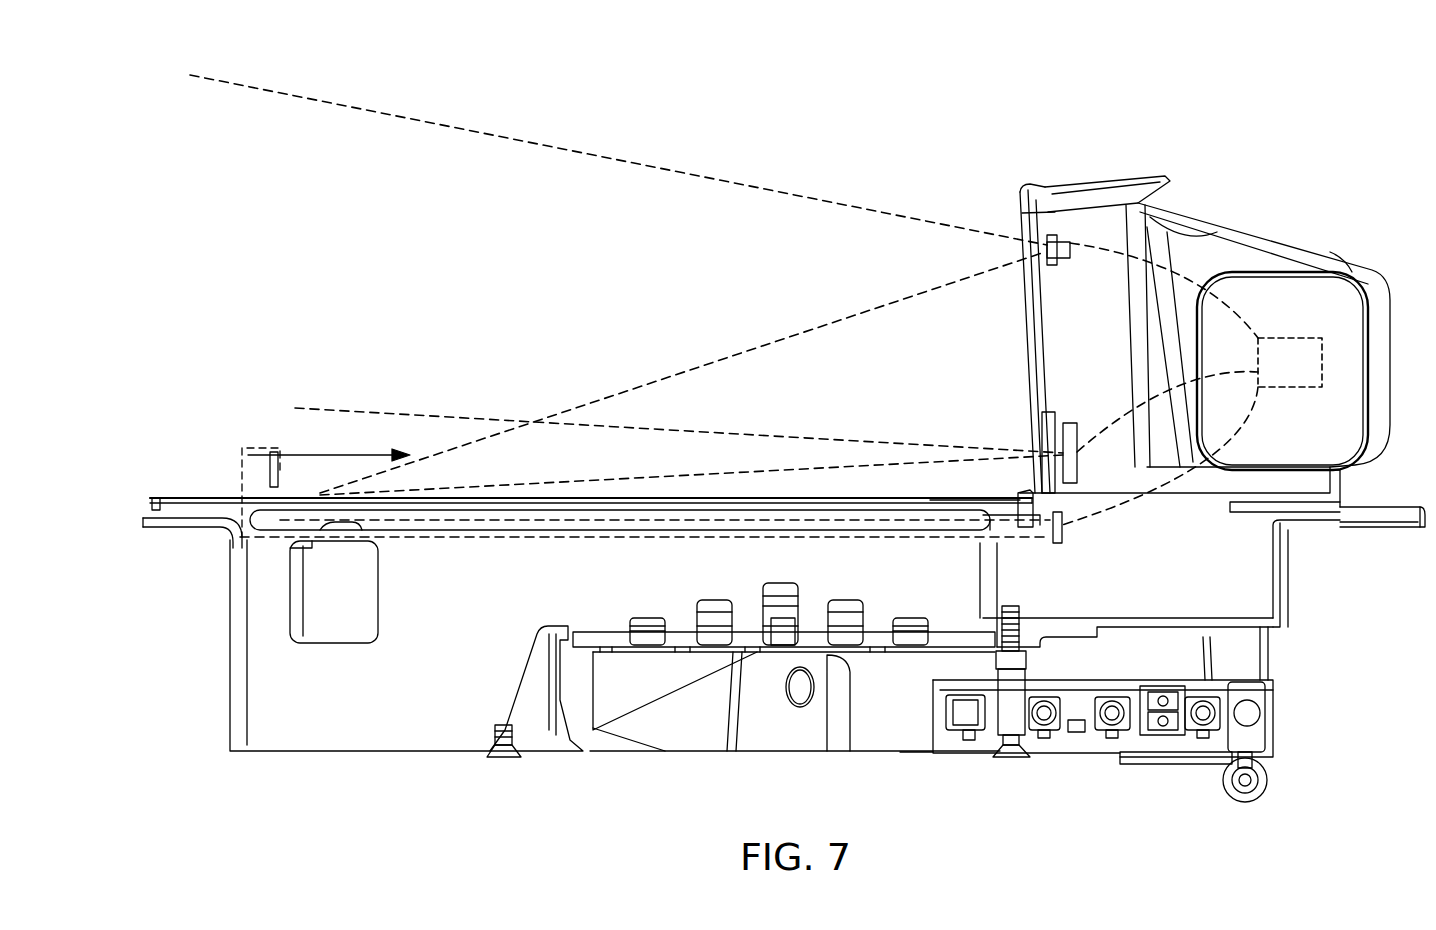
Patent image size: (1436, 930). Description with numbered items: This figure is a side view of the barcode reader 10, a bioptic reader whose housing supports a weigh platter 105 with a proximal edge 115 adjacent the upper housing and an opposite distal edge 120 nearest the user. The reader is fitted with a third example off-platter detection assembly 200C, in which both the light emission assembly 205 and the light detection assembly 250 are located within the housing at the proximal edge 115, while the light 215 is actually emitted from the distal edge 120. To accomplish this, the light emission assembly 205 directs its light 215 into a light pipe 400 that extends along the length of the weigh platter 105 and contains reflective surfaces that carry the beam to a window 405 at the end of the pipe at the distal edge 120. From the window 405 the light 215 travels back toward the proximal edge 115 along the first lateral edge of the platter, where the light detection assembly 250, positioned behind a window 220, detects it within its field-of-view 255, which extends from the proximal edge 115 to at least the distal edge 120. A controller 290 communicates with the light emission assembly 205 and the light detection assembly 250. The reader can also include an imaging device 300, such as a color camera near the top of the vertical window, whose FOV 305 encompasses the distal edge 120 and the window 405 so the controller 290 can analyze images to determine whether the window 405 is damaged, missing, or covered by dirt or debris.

The barcode reader 10 is at (1233, 128).
The weigh platter 105 is at (877, 497).
The proximal edge 115 is at (1018, 493).
The distal edge 120 is at (152, 497).
The off-platter detection assembly 200C is at (1152, 478).
The light emission assembly 205 is at (1057, 545).
The light 215 is at (335, 455).
The window 220 is at (1041, 415).
The light detection assembly 250 is at (1068, 423).
The field-of-view 255 is at (772, 432).
The controller 290 is at (1316, 377).
The imaging device 300 is at (1048, 226).
The FOV 305 is at (762, 189).
The light pipe 400 is at (480, 535).
The window 405 is at (270, 470).